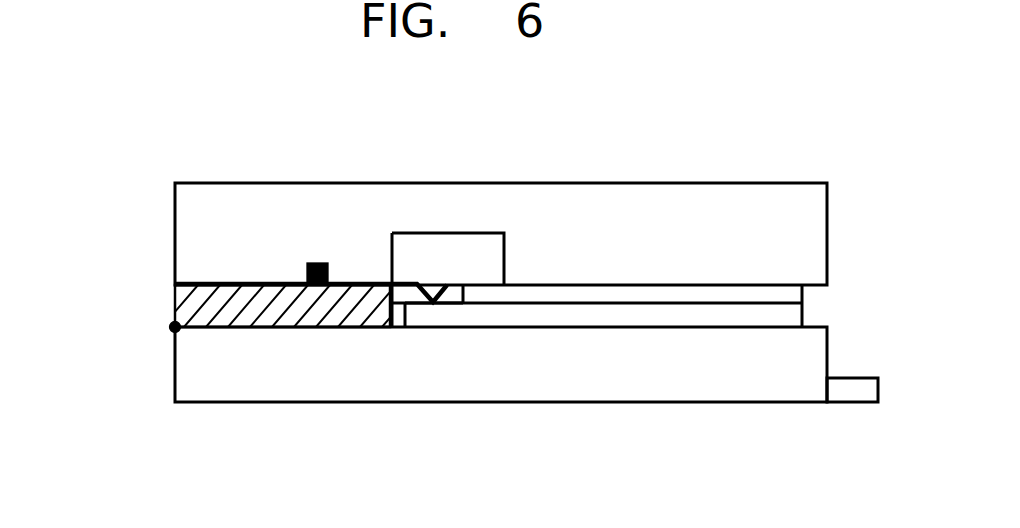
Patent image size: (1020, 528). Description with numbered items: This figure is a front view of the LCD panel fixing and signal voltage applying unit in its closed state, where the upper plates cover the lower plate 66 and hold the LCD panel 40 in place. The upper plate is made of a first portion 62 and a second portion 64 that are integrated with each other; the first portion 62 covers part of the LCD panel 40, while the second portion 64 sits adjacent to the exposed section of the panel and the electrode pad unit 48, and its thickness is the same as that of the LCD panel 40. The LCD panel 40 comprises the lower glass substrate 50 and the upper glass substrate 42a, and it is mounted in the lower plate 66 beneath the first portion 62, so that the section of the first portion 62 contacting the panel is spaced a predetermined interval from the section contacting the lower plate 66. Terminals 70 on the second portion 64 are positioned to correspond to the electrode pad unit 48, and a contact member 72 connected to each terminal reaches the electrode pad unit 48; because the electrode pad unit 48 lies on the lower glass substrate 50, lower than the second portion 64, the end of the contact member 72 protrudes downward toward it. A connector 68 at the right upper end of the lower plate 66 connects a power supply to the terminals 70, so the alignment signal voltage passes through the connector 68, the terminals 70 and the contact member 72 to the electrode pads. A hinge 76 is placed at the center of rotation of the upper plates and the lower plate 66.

The first portion of upper plate 62 is at (190, 235).
The second portion of upper plate 64 is at (175, 293).
The lower plate 66 is at (190, 373).
The connector 68 is at (855, 393).
The terminals 70 is at (318, 263).
The contact member 72 is at (379, 284).
The hinge 76 is at (170, 327).
The LCD panel 40 is at (820, 307).
The upper glass substrate 42a is at (678, 296).
The electrode pad unit 48 is at (470, 304).
The lower glass substrate 50 is at (590, 306).